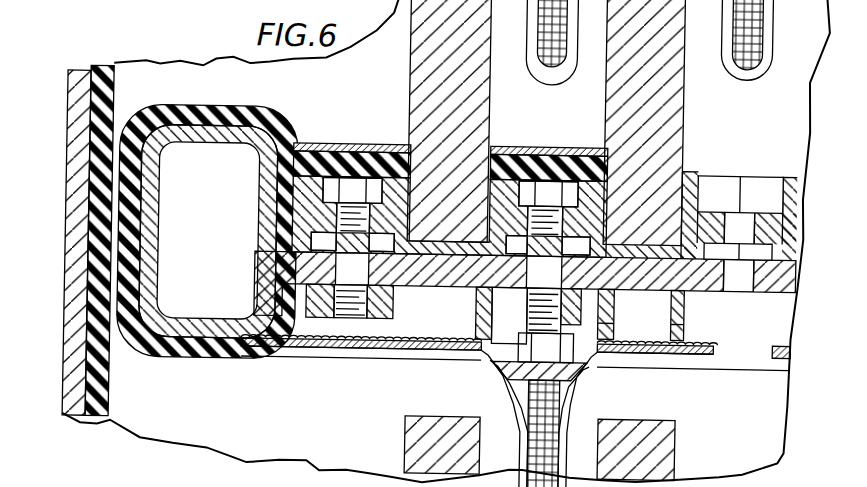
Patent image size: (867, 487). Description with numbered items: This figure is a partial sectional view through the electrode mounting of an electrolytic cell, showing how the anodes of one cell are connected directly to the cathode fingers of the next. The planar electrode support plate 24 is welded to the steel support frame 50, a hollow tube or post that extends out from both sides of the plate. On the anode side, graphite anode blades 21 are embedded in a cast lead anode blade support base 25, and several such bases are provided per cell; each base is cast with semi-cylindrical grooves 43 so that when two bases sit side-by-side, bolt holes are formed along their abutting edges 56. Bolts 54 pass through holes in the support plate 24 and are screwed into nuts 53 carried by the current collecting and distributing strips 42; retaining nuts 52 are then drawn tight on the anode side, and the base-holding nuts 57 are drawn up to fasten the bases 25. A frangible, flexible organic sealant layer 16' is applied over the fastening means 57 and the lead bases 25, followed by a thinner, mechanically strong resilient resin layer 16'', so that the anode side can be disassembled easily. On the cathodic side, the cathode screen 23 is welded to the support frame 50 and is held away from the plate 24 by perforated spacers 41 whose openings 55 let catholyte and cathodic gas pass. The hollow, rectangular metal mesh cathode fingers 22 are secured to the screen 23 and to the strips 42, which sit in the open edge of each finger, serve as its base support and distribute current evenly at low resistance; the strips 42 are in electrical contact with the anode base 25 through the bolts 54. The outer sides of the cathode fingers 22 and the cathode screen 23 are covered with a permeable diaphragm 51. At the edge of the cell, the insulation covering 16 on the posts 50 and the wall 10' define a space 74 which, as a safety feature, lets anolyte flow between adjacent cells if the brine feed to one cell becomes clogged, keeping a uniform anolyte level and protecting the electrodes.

The wall 10' is at (58, 242).
The insulation covering 16 is at (192, 242).
The frangible sealant layer 16' is at (352, 149).
The resilient resin layer 16'' is at (465, 151).
The base-holding nuts 57 is at (380, 150).
The abutting edges 56 is at (736, 193).
The anode blades 21 is at (668, 103).
The cathode fingers 22 is at (760, 31).
The permeable diaphragm 51 is at (754, 72).
The semi-cylindrical grooves 43 is at (714, 183).
The anode blade support base 25 is at (790, 229).
The support frame post 50 is at (147, 250).
The space 74 is at (116, 277).
The retaining nuts 52 is at (389, 251).
The electrode support plate 24 is at (426, 285).
The bolts 54 is at (536, 300).
The nuts 53 is at (542, 337).
The openings 55 is at (670, 308).
The spacers 41 is at (670, 323).
The cathode screen 23 is at (313, 338).
The current collecting and distributing strip 42 is at (491, 375).